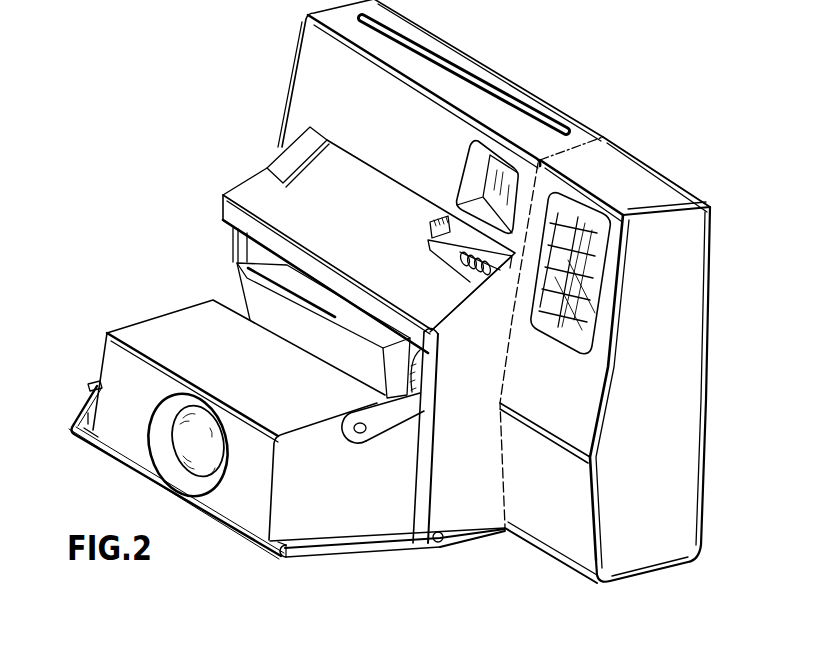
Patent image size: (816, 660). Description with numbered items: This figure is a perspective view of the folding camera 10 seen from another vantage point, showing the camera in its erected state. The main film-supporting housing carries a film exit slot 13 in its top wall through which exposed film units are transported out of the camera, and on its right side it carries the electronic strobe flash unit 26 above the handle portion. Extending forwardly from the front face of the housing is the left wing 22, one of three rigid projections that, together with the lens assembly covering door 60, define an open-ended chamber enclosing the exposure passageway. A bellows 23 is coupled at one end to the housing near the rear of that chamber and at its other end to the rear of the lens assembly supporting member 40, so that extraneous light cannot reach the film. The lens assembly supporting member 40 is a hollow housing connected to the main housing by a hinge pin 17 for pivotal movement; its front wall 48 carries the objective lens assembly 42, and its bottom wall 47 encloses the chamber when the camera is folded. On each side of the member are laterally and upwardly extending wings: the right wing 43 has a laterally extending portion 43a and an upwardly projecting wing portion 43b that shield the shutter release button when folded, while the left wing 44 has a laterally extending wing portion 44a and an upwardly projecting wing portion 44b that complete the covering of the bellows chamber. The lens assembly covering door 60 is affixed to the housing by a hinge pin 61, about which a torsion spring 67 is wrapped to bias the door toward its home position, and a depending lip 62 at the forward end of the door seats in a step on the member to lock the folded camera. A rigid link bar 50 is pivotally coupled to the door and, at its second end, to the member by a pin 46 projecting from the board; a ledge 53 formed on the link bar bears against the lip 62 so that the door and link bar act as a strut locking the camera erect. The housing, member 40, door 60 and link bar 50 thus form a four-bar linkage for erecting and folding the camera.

The camera 10 is at (321, 80).
The film exit slot 13 is at (467, 77).
The hinge pin 17 is at (443, 540).
The left wing 22 is at (478, 514).
The bellows 23 is at (260, 297).
The electronic strobe flash unit 26 is at (568, 214).
The lens assembly supporting member 40 is at (312, 506).
The objective lens assembly 42 is at (178, 463).
The wing 43 is at (78, 440).
The laterally extending portion 43a is at (93, 432).
The upwardly projecting wing portion 43b is at (92, 386).
The left wing 44 is at (280, 560).
The laterally extending wing portion 44a is at (277, 553).
The upwardly projecting wing portion 44b is at (303, 547).
The pin 46 is at (352, 432).
The bottom wall 47 is at (368, 552).
The front wall 48 is at (233, 503).
The link bar 50 is at (380, 430).
The ledge 53 is at (418, 352).
The lens assembly covering door 60 is at (266, 194).
The hinge pin 61 is at (432, 243).
The depending lip 62 is at (227, 217).
The torsion spring 67 is at (463, 270).